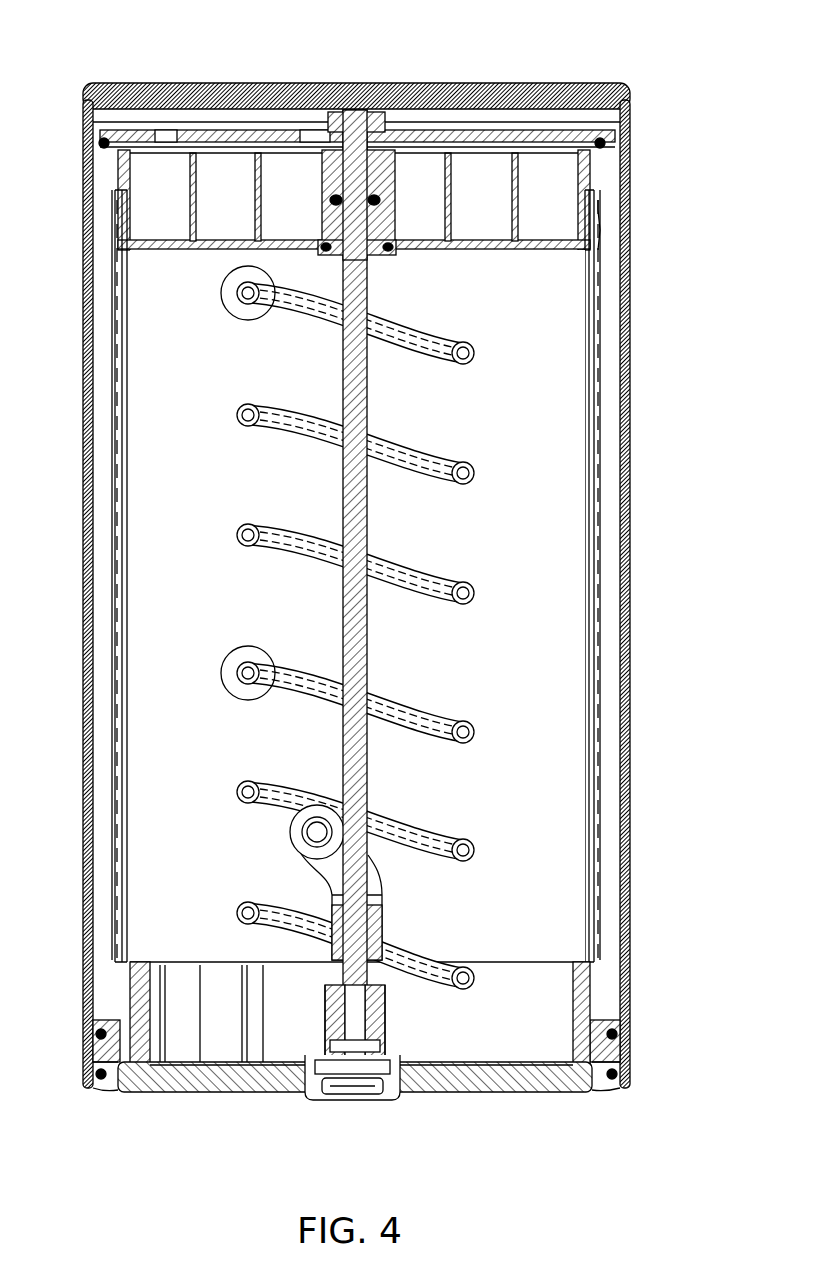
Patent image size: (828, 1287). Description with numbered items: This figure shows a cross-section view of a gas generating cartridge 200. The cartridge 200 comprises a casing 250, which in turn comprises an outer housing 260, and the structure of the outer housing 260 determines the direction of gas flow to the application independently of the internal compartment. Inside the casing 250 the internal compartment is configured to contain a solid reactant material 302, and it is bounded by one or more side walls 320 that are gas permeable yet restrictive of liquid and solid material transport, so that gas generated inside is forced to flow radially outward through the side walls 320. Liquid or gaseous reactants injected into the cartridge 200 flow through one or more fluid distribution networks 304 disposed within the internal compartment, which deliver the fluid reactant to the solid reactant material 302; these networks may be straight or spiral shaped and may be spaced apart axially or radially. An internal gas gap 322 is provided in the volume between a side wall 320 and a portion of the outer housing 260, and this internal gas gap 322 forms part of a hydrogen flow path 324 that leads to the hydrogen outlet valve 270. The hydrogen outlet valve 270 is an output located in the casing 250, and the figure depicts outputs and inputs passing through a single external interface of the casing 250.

The cartridge 200 is at (112, 58).
The casing 250 is at (607, 84).
The outer housing 260 is at (628, 848).
The hydrogen outlet valve 270 is at (357, 1085).
The solid reactant material 302 is at (570, 387).
The fluid distribution network 304 is at (470, 588).
The side wall 320 is at (590, 318).
The internal gas gap 322 is at (608, 555).
The hydrogen flow path 324 is at (610, 366).